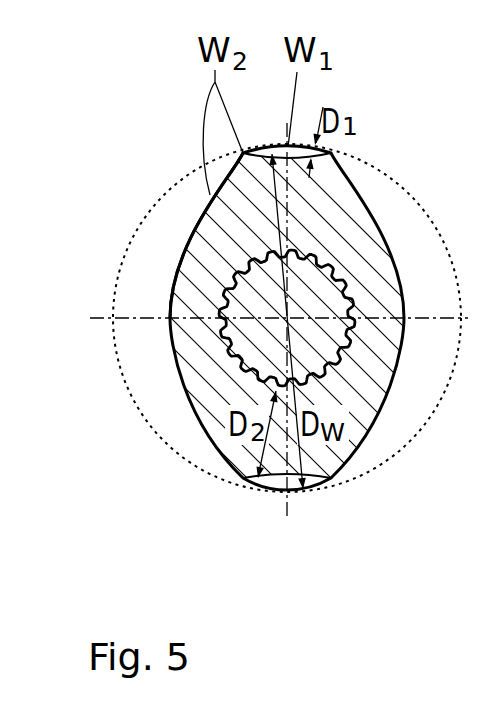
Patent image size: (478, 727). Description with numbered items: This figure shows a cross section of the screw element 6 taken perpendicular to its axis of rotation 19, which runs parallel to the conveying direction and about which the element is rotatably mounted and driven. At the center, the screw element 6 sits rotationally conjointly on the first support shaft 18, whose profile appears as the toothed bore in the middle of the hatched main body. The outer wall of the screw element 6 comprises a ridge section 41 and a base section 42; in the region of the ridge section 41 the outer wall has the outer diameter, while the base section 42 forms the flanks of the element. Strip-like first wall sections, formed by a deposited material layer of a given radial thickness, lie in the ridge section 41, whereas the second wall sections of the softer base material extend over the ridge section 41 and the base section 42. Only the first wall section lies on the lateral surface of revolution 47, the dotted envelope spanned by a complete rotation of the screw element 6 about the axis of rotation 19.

The screw element 6 is at (170, 137).
The first support shaft 18 is at (192, 408).
The axis of rotation 19 is at (288, 318).
The ridge section 41 is at (287, 493).
The base section 42 is at (358, 446).
The lateral surface of revolution 47 is at (410, 441).